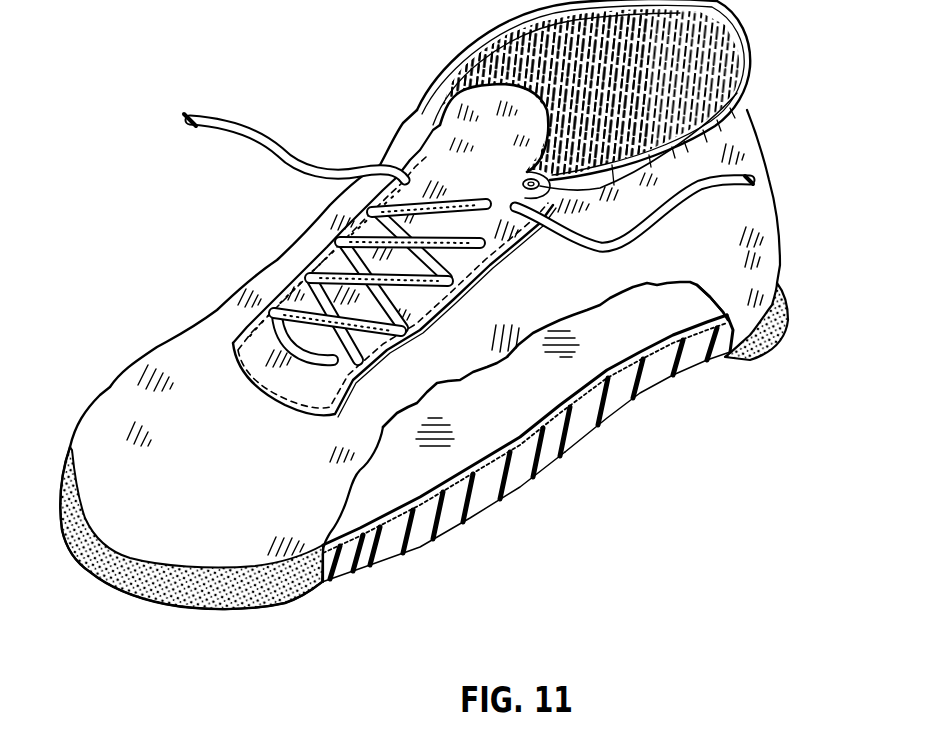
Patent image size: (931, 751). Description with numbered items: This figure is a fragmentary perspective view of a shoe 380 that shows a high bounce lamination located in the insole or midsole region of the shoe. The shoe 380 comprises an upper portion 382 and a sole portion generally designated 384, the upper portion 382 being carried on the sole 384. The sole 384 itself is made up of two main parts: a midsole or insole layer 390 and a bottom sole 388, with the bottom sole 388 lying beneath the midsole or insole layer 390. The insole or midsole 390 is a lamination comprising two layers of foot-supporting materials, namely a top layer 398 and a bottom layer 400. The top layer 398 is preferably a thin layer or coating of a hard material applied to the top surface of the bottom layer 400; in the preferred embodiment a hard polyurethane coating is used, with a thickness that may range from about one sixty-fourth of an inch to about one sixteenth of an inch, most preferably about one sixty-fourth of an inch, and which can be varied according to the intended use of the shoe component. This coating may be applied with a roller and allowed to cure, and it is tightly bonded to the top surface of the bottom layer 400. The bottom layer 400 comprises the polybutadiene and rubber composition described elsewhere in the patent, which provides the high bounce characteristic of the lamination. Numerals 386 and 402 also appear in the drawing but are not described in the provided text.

The shoe 380 is at (180, 198).
The upper portion 382 is at (402, 92).
The sole portion 384 is at (672, 386).
The lateral support panel 386 is at (405, 470).
The bottom sole 388 is at (391, 575).
The midsole or insole layer 390 is at (355, 572).
The top layer 398 is at (488, 484).
The bottom layer 400 is at (551, 461).
The heel portion 402 is at (698, 363).